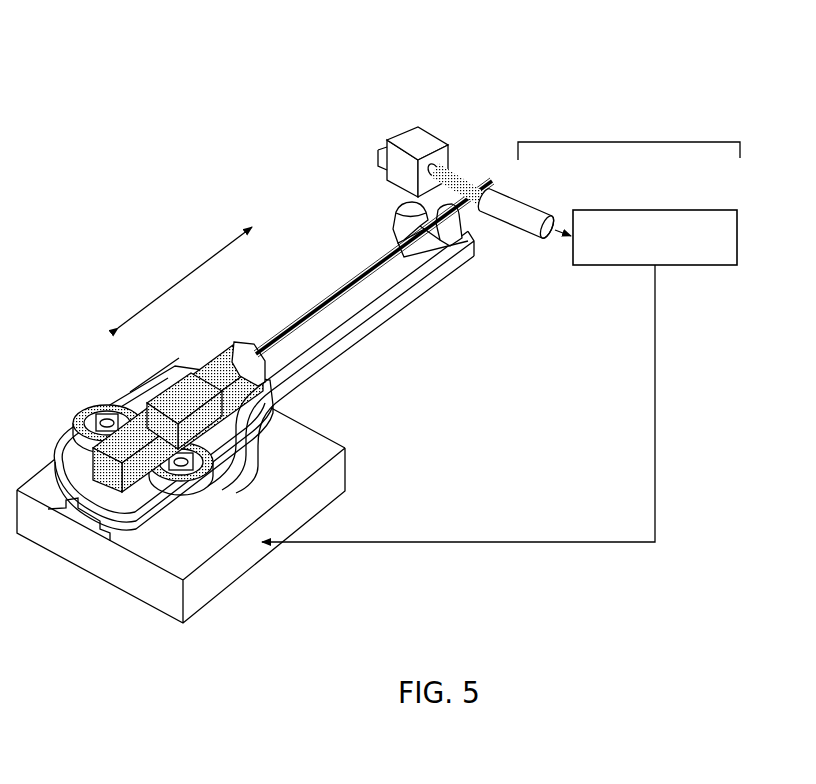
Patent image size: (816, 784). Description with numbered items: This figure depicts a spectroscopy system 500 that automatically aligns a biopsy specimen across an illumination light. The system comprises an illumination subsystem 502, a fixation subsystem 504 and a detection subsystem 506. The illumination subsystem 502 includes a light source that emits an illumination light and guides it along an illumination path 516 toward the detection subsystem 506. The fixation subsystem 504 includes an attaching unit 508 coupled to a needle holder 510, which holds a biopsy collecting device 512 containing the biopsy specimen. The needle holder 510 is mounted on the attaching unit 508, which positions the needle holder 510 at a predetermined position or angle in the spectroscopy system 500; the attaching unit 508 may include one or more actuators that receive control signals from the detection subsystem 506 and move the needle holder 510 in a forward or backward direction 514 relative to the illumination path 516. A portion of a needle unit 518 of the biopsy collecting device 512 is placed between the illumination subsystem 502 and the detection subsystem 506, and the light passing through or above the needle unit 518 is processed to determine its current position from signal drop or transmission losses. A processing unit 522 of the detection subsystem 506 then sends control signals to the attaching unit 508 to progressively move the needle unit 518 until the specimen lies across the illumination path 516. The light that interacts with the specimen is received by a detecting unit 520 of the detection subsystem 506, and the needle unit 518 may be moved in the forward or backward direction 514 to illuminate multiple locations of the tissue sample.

The spectroscopy system 500 is at (126, 53).
The illumination subsystem 502 is at (412, 142).
The fixation subsystem 504 is at (63, 500).
The detection subsystem 506 is at (628, 142).
The attaching unit 508 is at (230, 575).
The needle holder 510 is at (323, 355).
The biopsy collecting device 512 is at (245, 342).
The forward or backward direction 514 is at (178, 280).
The illumination path 516 is at (467, 187).
The needle unit 518 is at (348, 282).
The detecting unit 520 is at (530, 207).
The processing unit 522 is at (705, 210).